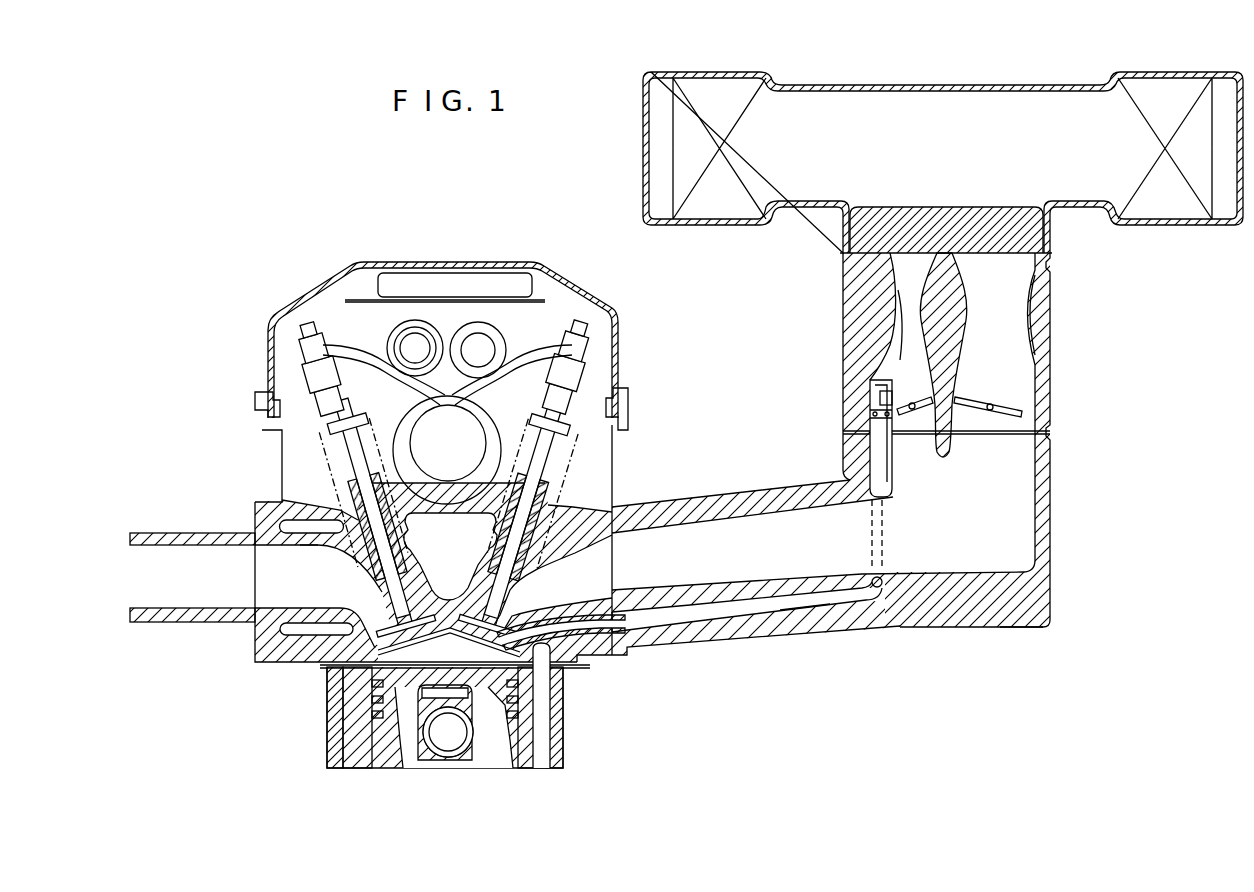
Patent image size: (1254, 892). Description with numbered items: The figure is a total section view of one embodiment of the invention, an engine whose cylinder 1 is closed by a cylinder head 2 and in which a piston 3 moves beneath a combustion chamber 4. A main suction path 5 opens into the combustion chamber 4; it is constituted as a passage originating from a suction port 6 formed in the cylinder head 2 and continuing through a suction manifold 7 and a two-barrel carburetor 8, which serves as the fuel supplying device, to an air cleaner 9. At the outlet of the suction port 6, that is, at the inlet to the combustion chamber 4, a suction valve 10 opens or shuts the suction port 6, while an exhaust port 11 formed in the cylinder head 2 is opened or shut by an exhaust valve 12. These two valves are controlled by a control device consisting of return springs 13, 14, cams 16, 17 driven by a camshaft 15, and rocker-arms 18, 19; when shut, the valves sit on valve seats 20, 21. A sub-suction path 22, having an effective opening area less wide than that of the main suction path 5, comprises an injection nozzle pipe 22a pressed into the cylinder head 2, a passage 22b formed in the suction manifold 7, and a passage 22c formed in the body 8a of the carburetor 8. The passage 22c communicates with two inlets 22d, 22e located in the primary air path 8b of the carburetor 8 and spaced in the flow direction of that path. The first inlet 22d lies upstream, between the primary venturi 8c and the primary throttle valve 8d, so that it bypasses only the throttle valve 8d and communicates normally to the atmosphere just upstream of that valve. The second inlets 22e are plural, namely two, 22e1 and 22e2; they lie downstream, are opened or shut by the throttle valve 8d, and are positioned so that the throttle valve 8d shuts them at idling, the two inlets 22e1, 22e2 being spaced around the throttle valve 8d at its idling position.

The cylinder 1 is at (327, 757).
The cylinder head 2 is at (260, 520).
The piston 3 is at (470, 763).
The combustion chamber 4 is at (417, 657).
The main suction path 5 is at (972, 535).
The suction port 6 is at (610, 575).
The suction manifold 7 is at (1049, 629).
The two-barrel carburetor 8 is at (1050, 296).
The body of the carburetor 8a is at (1040, 334).
The primary air path 8b is at (905, 356).
The primary venturi 8c is at (860, 288).
The primary throttle valve 8d is at (905, 338).
The air cleaner 9 is at (1088, 84).
The suction valve 10 is at (517, 628).
The exhaust port 11 is at (255, 600).
The exhaust valve 12 is at (413, 629).
The return spring 13 is at (617, 412).
The return spring 14 is at (268, 410).
The camshaft 15 is at (420, 416).
The cam 16 is at (470, 470).
The cam 17 is at (432, 428).
The rocker-arm 18 is at (548, 330).
The rocker-arm 19 is at (357, 327).
The valve seat 20 is at (552, 668).
The valve seat 21 is at (376, 618).
The sub-suction path 22 is at (756, 625).
The injection nozzle pipe 22a is at (607, 648).
The passage 22b is at (813, 604).
The passage 22c is at (880, 403).
The inlet 22d is at (880, 388).
The inlets 22e is at (885, 414).
The inlet 22e1 is at (837, 443).
The inlet 22e2 is at (837, 443).